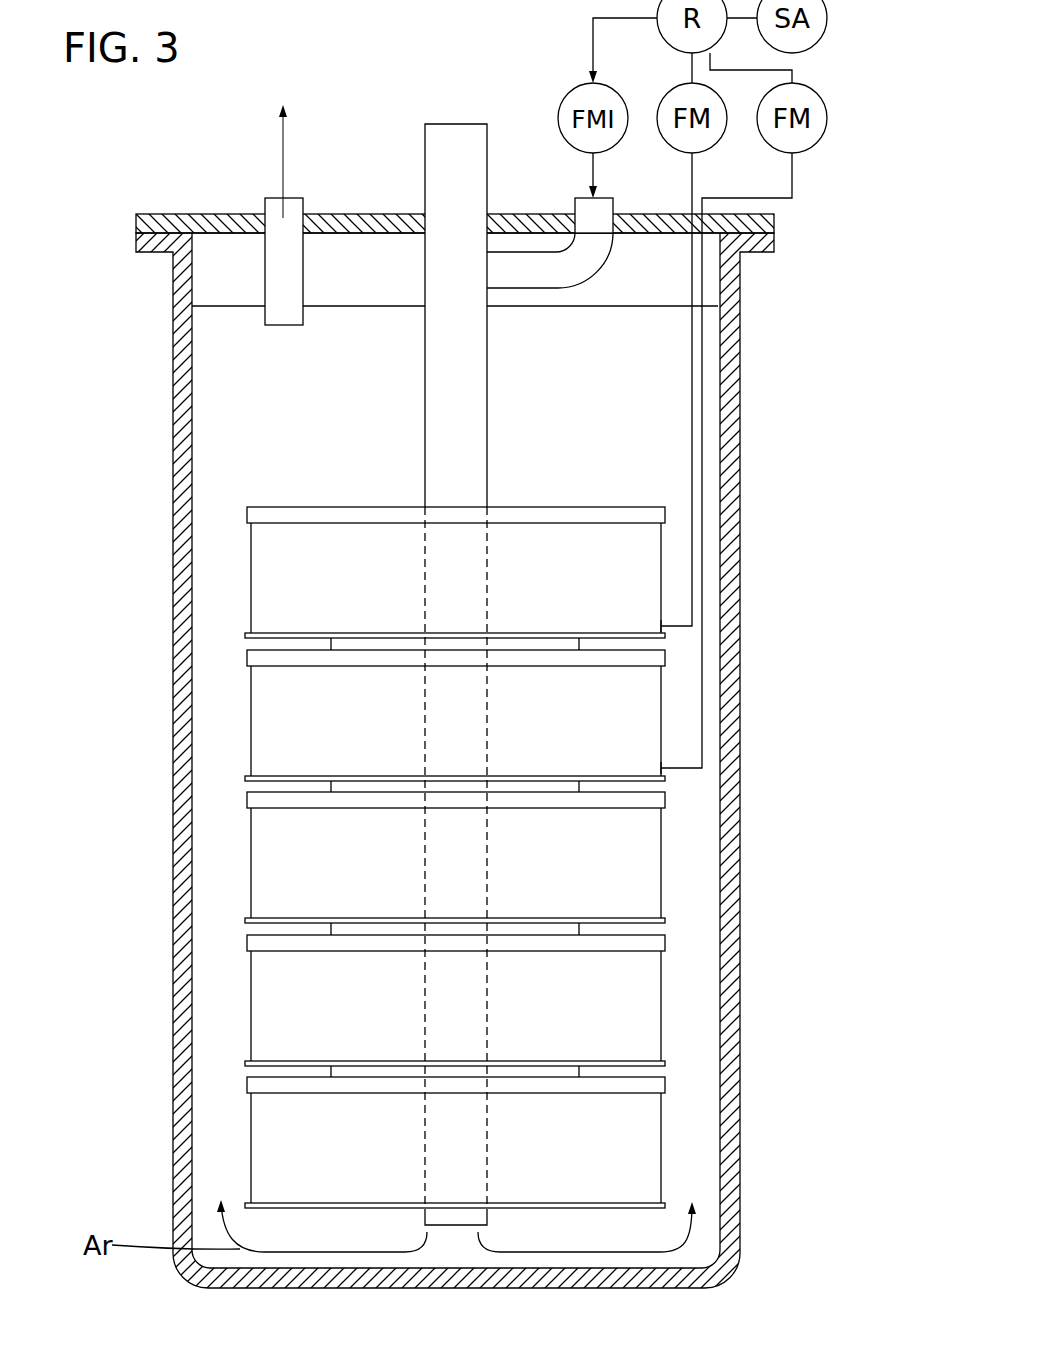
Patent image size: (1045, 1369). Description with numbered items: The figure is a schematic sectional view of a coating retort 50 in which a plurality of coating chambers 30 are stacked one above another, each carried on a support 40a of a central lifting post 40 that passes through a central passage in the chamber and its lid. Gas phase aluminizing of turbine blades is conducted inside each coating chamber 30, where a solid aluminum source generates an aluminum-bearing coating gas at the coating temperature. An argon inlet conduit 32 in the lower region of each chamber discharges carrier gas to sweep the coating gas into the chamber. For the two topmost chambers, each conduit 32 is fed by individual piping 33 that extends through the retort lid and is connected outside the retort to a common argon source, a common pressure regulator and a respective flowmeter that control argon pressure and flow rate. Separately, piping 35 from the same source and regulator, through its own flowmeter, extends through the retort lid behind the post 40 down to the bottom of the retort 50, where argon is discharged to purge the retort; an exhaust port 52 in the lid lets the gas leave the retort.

The coating chamber 30 is at (668, 720).
The argon inlet conduit 32 is at (677, 627).
The piping 33 is at (702, 473).
The piping 35 is at (575, 208).
The lifting post 40 is at (487, 408).
The support 40a is at (600, 642).
The coating retort 50 is at (170, 517).
The exhaust port 52 is at (273, 197).